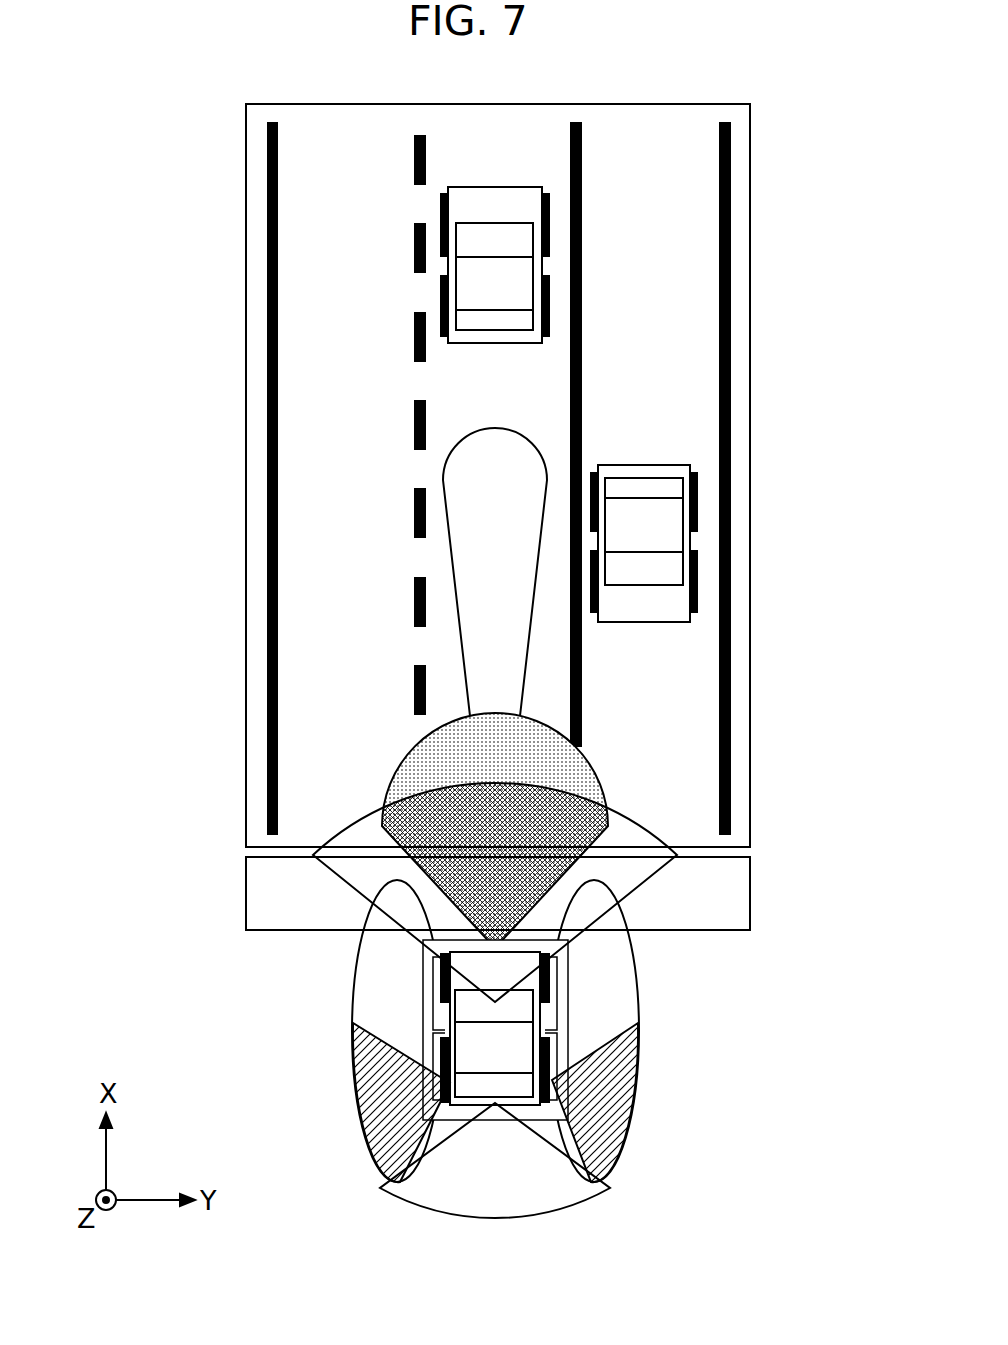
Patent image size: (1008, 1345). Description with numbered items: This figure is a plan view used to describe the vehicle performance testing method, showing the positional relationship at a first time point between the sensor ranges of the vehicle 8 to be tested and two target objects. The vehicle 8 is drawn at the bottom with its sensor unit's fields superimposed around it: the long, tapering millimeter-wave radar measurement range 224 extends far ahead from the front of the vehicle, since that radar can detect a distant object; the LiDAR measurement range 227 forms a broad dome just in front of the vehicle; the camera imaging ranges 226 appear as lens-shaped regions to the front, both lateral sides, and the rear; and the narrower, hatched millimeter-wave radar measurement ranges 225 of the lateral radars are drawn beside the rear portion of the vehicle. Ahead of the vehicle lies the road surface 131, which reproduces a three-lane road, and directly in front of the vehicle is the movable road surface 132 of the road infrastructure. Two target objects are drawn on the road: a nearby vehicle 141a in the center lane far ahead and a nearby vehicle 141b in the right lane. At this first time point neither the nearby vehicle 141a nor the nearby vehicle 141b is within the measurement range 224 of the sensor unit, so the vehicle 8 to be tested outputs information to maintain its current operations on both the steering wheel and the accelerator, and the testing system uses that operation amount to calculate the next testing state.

The vehicle to be tested 8 is at (553, 1050).
The road surface 131 is at (738, 775).
The movable road surface 132 is at (738, 888).
The nearby vehicle 141a is at (438, 262).
The nearby vehicle 141b is at (691, 538).
The millimeter-wave radar measurement range 224 is at (463, 512).
The millimeter-wave radar measurement range 225 is at (370, 1115).
The camera imaging range 226 is at (453, 1034).
The LiDAR measurement range 227 is at (432, 762).